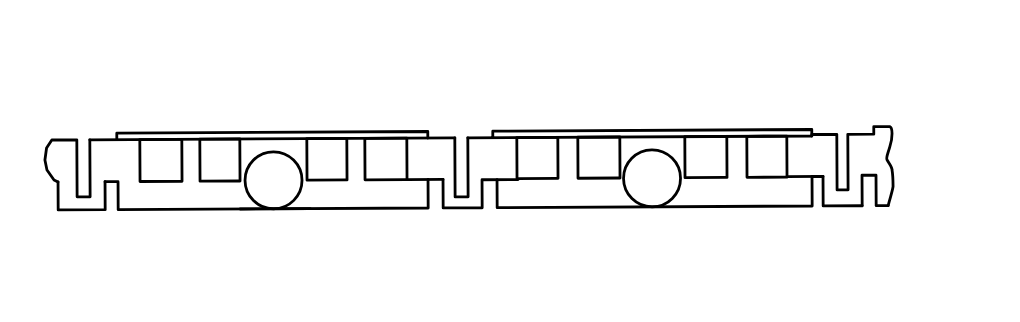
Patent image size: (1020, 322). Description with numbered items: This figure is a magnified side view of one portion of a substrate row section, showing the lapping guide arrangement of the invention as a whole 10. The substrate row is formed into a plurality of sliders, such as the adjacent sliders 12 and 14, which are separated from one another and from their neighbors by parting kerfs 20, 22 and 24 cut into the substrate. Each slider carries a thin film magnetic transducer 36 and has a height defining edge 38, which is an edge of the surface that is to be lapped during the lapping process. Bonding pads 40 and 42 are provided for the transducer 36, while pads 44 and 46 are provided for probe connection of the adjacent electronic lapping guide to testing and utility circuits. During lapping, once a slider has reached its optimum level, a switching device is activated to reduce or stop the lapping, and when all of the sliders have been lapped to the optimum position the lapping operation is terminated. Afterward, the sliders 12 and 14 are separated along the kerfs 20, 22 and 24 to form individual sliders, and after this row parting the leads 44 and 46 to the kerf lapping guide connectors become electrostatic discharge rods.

The light assembly 10 is at (118, 108).
The first housing section 12 is at (272, 175).
The second housing section 14 is at (565, 195).
The kerf 20 is at (80, 204).
The kerf 22 is at (847, 203).
The kerf 24 is at (460, 202).
The thin film magnetic transducer 36 is at (249, 194).
The height defining edge 38 is at (268, 210).
The bonding pad 40 is at (225, 151).
The bonding pad 42 is at (330, 151).
The pad 44 is at (165, 151).
The pad 46 is at (391, 151).